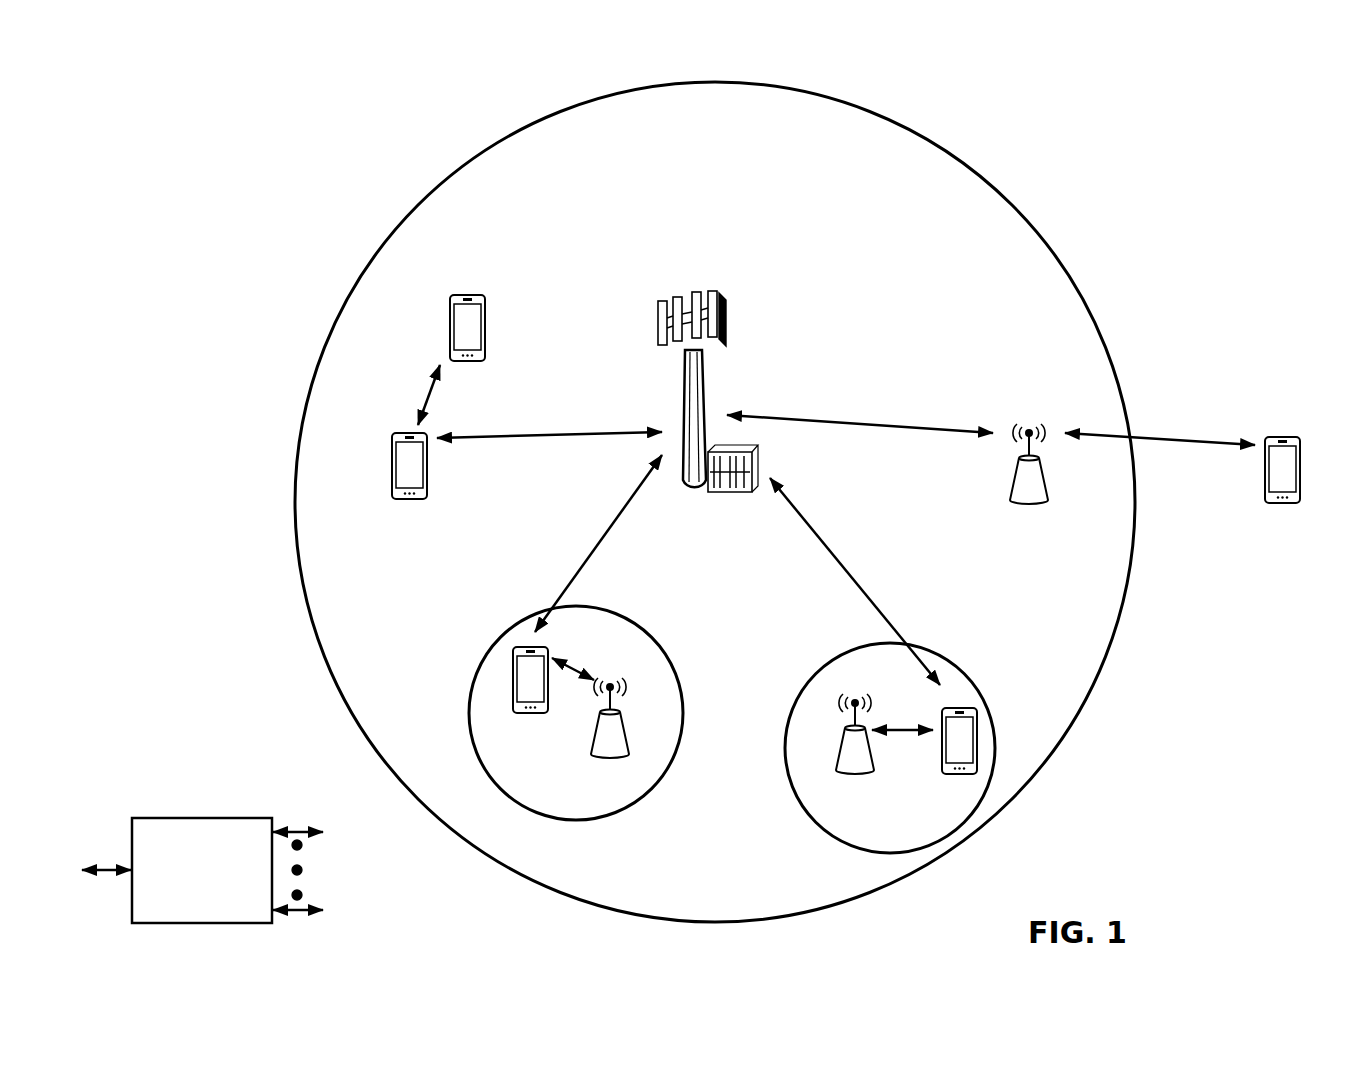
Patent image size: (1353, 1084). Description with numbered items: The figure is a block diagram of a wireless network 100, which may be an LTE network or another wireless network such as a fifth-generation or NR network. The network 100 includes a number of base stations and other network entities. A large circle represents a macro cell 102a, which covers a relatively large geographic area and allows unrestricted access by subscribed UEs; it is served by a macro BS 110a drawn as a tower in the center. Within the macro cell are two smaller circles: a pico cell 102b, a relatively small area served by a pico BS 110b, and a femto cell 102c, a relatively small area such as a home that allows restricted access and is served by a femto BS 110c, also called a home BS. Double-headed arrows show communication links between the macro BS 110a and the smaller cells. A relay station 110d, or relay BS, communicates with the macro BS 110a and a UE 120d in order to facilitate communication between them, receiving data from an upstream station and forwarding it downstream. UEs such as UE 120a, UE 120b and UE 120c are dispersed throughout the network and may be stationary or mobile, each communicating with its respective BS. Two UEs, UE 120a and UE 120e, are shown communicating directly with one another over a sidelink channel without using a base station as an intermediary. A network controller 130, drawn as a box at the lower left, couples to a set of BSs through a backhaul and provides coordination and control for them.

The wireless network 100 is at (190, 80).
The macro cell 102a is at (990, 185).
The pico cell 102b is at (661, 643).
The femto cell 102c is at (820, 660).
The macro BS 110a is at (703, 282).
The pico BS 110b is at (632, 742).
The femto BS 110c is at (841, 758).
The relay station 110d is at (1029, 428).
The UE 120a is at (392, 462).
The UE 120b is at (516, 714).
The UE 120c is at (944, 774).
The UE 120d is at (1296, 437).
The UE 120e is at (452, 312).
The network controller 130 is at (200, 817).